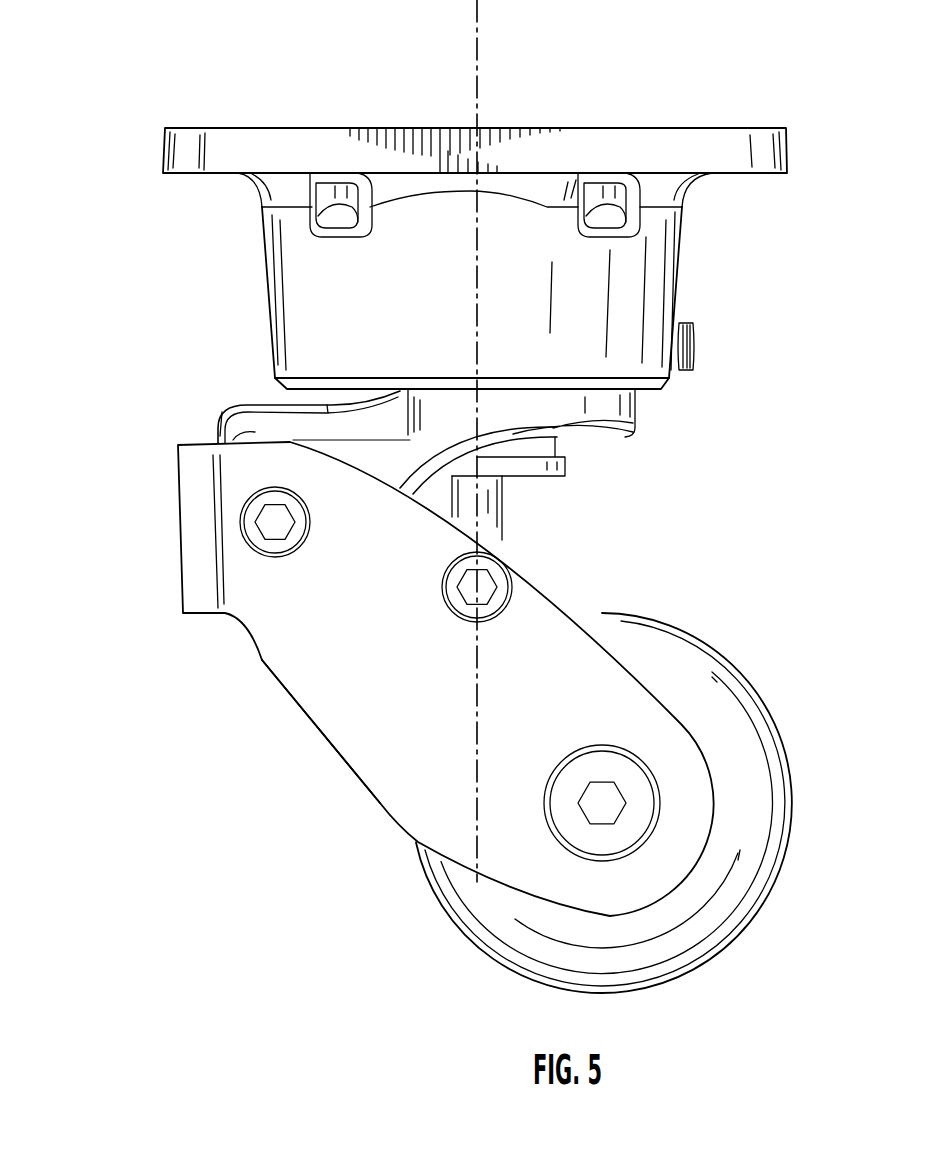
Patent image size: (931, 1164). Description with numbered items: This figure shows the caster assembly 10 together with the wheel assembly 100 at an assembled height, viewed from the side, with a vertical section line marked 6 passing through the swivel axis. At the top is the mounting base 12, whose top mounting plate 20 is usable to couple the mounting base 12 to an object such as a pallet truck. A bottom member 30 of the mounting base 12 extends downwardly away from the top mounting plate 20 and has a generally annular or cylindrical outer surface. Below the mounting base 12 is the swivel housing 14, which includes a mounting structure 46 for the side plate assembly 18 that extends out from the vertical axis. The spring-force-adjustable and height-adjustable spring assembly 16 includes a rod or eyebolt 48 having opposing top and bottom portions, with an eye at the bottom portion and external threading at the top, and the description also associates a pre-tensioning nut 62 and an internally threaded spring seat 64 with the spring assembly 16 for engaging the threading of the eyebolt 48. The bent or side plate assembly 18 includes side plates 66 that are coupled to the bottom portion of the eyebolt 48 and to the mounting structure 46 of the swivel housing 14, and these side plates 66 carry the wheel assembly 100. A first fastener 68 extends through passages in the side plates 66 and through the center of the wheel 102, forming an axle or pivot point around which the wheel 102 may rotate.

The section line 6- 6 is at (477, 32).
The caster assembly 10 is at (111, 139).
The mounting base 12 is at (268, 315).
The swivel housing 14 is at (235, 405).
The spring assembly 16 is at (567, 458).
The side plate assembly 18 is at (264, 669).
The top mounting plate 20 is at (205, 128).
The bottom member 30 is at (682, 275).
The mounting structure 46 is at (220, 425).
The rod or eyebolt 48 is at (488, 508).
The pre-tensioning nut 62 is at (322, 700).
The spring seat 64 is at (575, 830).
The side plates 66 is at (273, 523).
The first fastener 68 is at (477, 587).
The wheel assembly 100 is at (398, 1028).
The wheel 102 is at (682, 948).